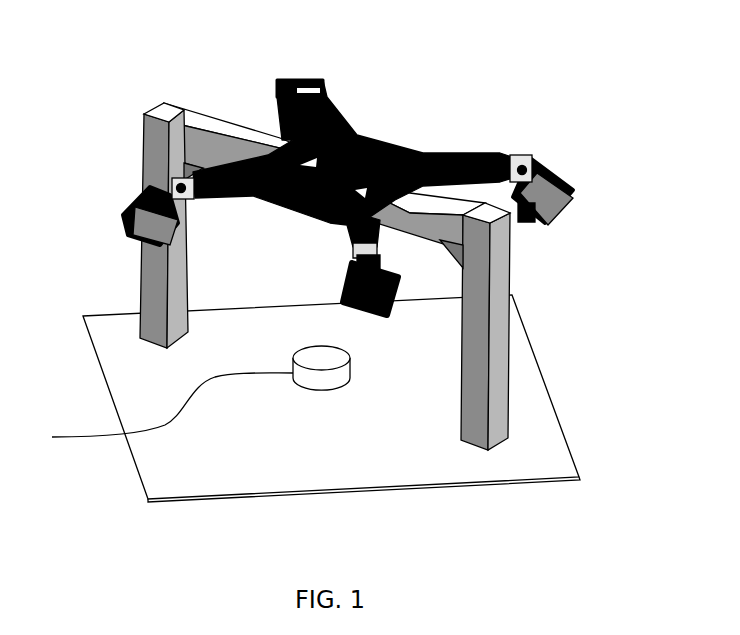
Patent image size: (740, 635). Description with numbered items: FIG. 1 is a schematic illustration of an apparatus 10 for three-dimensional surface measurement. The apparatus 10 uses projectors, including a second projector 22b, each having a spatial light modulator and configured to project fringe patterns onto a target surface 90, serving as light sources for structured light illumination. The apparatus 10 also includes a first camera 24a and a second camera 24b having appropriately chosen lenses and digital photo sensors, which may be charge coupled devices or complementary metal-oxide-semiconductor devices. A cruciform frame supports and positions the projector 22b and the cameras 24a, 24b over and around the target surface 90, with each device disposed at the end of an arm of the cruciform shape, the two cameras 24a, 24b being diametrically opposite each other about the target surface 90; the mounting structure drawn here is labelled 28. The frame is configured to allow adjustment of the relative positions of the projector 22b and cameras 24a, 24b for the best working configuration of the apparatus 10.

The apparatus 10 is at (530, 74).
The second projector 22b is at (288, 80).
The first camera 24a is at (128, 219).
The second camera 24b is at (572, 186).
The mounting frame 28 is at (368, 137).
The target surface 90 is at (189, 395).